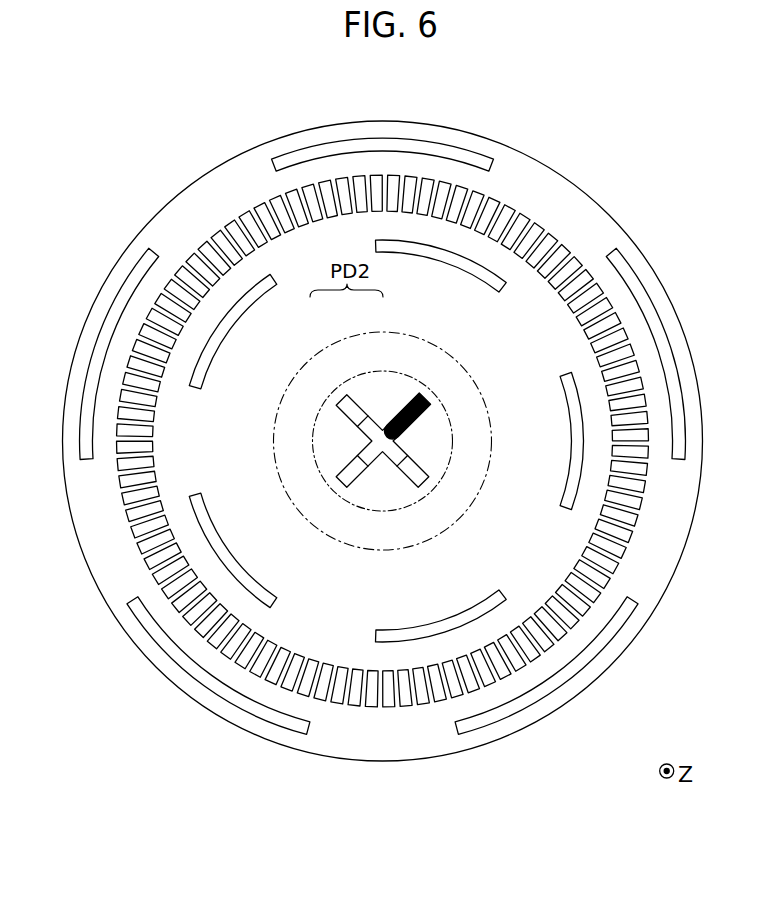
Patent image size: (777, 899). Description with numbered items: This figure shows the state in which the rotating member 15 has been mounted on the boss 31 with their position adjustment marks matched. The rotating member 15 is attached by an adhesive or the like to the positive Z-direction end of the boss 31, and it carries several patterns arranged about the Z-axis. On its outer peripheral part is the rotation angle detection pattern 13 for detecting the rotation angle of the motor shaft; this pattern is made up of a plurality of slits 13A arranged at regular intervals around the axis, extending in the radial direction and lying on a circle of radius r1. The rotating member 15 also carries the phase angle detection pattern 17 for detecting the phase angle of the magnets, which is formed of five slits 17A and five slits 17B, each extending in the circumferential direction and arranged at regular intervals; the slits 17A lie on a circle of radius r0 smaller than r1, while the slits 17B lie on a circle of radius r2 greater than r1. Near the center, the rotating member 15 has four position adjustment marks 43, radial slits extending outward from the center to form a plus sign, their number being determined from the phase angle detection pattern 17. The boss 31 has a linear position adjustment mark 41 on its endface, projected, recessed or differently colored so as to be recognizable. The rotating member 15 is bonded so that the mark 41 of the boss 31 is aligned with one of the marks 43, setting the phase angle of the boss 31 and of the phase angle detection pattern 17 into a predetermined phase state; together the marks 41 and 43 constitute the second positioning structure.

The rotating member 15 is at (460, 128).
The phase angle detection pattern 17 is at (286, 146).
The slits 17A is at (462, 273).
The slits 17B is at (122, 279).
The rotation angle detection pattern 13 is at (551, 228).
The slits 13A is at (504, 203).
The boss 31 is at (450, 352).
The position adjustment mark 41 is at (408, 398).
The position adjustment marks 43 is at (378, 432).